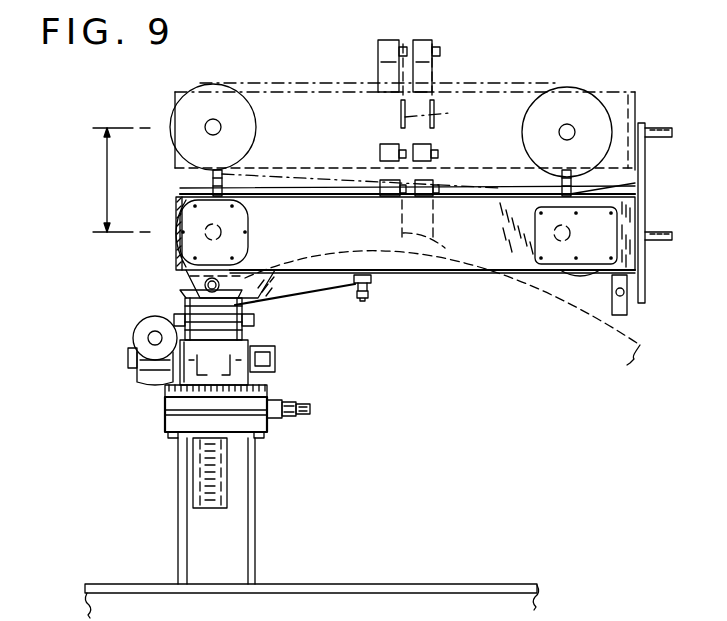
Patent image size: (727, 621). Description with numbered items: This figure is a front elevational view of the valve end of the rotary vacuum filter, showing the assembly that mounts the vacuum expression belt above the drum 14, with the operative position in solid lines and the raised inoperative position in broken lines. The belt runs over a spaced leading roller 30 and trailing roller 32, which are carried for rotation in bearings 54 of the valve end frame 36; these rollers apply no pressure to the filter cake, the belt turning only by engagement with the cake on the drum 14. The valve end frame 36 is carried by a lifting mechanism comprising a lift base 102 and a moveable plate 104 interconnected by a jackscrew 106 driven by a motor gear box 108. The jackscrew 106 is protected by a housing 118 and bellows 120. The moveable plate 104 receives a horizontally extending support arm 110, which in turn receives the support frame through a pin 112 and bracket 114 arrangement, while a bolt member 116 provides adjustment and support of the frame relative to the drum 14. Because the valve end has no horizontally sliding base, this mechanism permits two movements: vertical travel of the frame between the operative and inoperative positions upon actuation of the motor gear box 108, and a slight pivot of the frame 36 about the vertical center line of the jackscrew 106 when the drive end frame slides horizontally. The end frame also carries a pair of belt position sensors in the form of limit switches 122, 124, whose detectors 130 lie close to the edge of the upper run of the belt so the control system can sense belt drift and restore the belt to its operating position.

The drum 14 is at (622, 355).
The leading roller 30 is at (172, 140).
The trailing roller 32 is at (634, 187).
The valve end frame 36 is at (607, 92).
The bearings 54 is at (603, 232).
The lift base 102 is at (237, 349).
The moveable plate 104 is at (187, 300).
The jackscrew 106 is at (200, 484).
The motor gear box 108 is at (155, 388).
The support arm 110 is at (316, 288).
The pin 112 is at (245, 283).
The bracket 114 is at (263, 276).
The bolt member 116 is at (365, 302).
The housing 118 is at (228, 498).
The bellows 120 is at (222, 322).
The limit switch 122 is at (378, 44).
The limit switch 124 is at (421, 42).
The detectors 130 is at (449, 151).